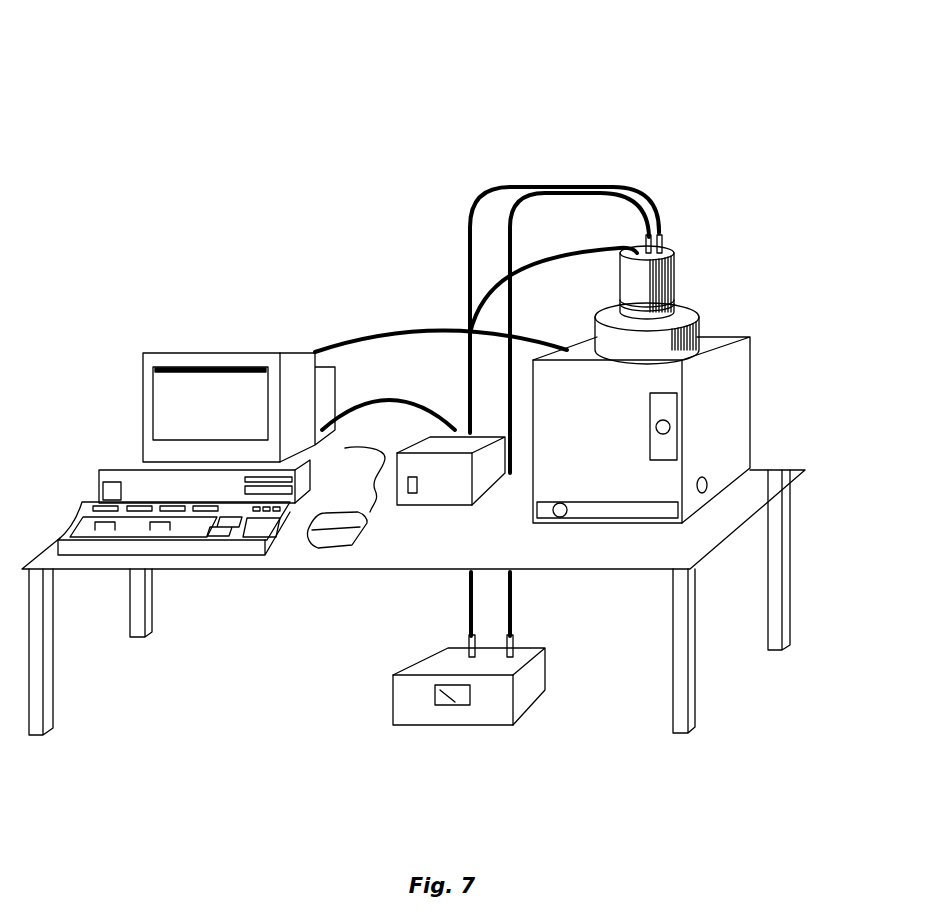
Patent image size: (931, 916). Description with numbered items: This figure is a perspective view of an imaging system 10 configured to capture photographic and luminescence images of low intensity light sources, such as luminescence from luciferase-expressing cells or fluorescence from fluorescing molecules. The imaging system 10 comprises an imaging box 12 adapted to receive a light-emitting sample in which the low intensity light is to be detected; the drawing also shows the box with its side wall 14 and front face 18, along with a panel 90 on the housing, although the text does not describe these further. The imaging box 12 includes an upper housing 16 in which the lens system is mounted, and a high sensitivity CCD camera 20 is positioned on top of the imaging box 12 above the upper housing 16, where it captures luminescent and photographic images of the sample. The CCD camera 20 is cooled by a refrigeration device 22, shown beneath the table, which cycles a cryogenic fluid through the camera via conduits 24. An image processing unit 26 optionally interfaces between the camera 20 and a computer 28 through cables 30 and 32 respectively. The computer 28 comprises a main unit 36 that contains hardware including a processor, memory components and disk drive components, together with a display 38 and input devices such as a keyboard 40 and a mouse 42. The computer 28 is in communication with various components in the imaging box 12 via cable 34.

The imaging system 10 is at (213, 164).
The imaging box 12 is at (797, 315).
The housing 14 is at (724, 427).
The upper housing 16 is at (683, 317).
The sample chamber door 18 is at (615, 478).
The CCD camera 20 is at (673, 257).
The refrigeration device 22 is at (442, 663).
The conduits 24 is at (510, 192).
The image processing unit 26 is at (487, 478).
The computer 28 is at (146, 330).
The cable 30 is at (587, 248).
The cable 32 is at (393, 395).
The cable 34 is at (417, 332).
The main unit 36 is at (134, 461).
The display 38 is at (143, 374).
The keyboard 40 is at (137, 527).
The mouse 42 is at (300, 523).
The control panel 90 is at (663, 410).